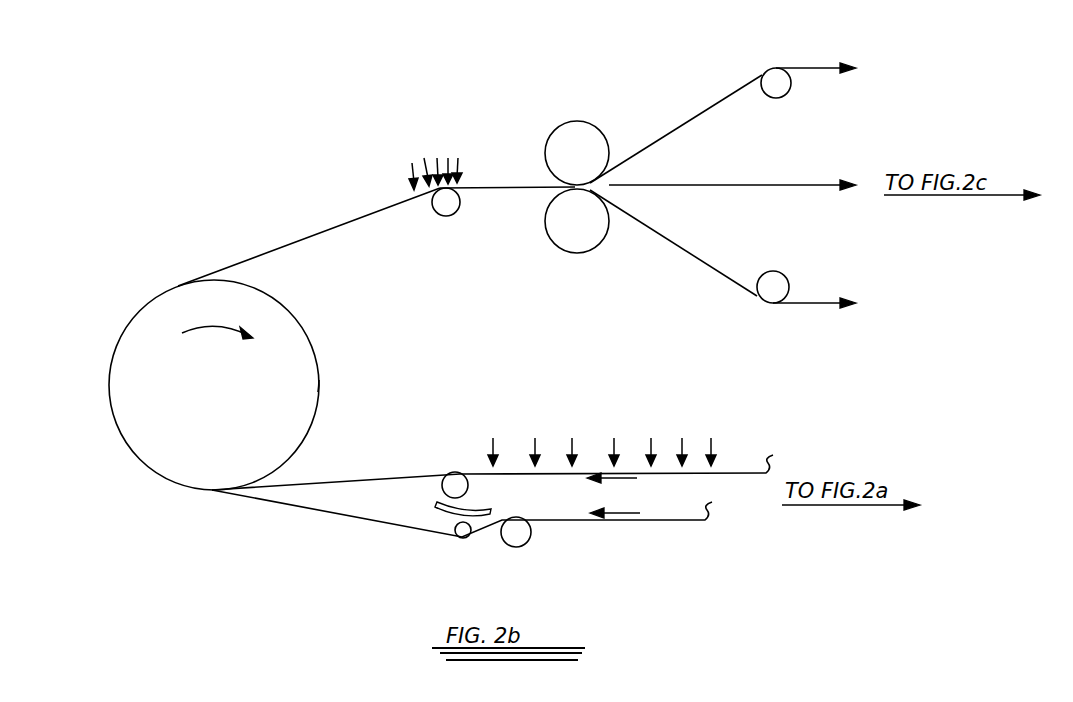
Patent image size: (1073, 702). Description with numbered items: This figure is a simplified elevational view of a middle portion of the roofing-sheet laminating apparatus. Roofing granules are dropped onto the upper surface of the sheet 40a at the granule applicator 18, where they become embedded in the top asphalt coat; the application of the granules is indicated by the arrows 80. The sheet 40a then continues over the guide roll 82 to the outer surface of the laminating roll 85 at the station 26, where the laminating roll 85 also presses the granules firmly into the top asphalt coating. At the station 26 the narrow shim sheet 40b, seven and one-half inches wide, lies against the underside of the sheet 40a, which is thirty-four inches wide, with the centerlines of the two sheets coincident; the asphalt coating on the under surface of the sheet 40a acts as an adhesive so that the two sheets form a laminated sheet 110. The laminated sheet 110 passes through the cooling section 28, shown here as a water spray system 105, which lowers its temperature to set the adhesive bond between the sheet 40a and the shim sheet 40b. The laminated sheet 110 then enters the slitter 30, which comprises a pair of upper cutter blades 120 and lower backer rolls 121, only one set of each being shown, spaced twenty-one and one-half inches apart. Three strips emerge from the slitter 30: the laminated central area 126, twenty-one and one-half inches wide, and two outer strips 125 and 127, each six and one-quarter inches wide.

The granule applicator 18 is at (622, 392).
The station 26 is at (328, 338).
The cooling section 28 is at (392, 172).
The slitter 30 is at (620, 177).
The sheet 40a is at (318, 480).
The shim sheet 40b is at (387, 524).
The arrows 80 is at (643, 447).
The guide roll 82 is at (455, 485).
The laminating roll 85 is at (319, 385).
The water spray system 105 is at (461, 160).
The laminated sheet 110 is at (299, 240).
The upper cutter blades 120 is at (557, 151).
The lower backer rolls 121 is at (568, 238).
The outer strip 125 is at (806, 68).
The laminated central area 126 is at (806, 185).
The outer strip 127 is at (814, 303).